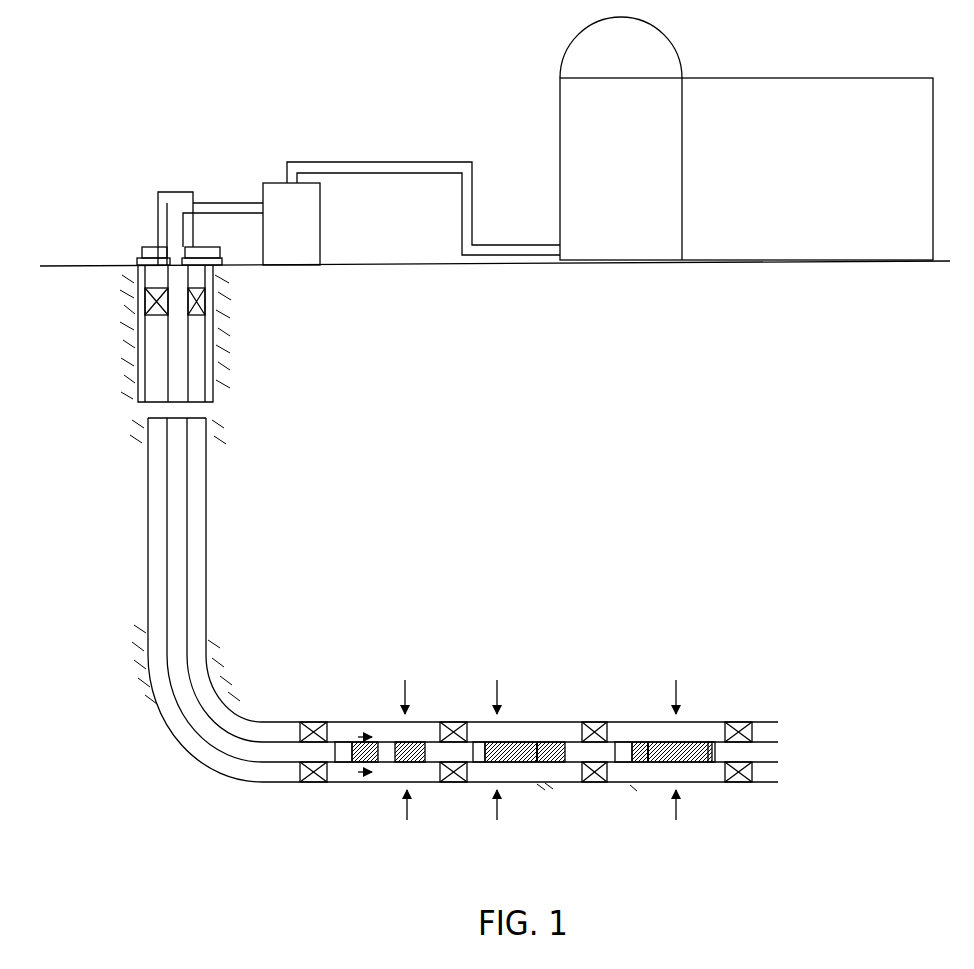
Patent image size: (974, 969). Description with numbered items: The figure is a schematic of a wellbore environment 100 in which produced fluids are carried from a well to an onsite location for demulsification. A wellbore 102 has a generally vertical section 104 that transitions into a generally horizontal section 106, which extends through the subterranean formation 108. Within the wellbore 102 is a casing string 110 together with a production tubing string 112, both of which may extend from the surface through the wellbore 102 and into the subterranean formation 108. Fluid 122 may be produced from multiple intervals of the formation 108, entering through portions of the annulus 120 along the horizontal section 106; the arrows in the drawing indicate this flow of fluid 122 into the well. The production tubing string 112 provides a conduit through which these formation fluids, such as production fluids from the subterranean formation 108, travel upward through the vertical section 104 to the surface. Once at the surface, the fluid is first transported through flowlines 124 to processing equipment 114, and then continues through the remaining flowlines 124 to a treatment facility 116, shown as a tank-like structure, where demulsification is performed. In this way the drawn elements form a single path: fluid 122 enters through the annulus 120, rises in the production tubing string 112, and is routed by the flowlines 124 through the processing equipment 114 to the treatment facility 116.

The wellbore environment 100 is at (495, 330).
The wellbore 102 is at (206, 480).
The generally vertical section 104 is at (206, 499).
The generally horizontal section 106 is at (567, 732).
The subterranean formation 108 is at (487, 569).
The casing string 110 is at (215, 314).
The production tubing string 112 is at (210, 543).
The processing equipment 114 is at (320, 235).
The treatment facility 116 is at (560, 171).
The annulus 120 is at (615, 775).
The fluid 122 is at (405, 688).
The flowlines 124 is at (232, 202).